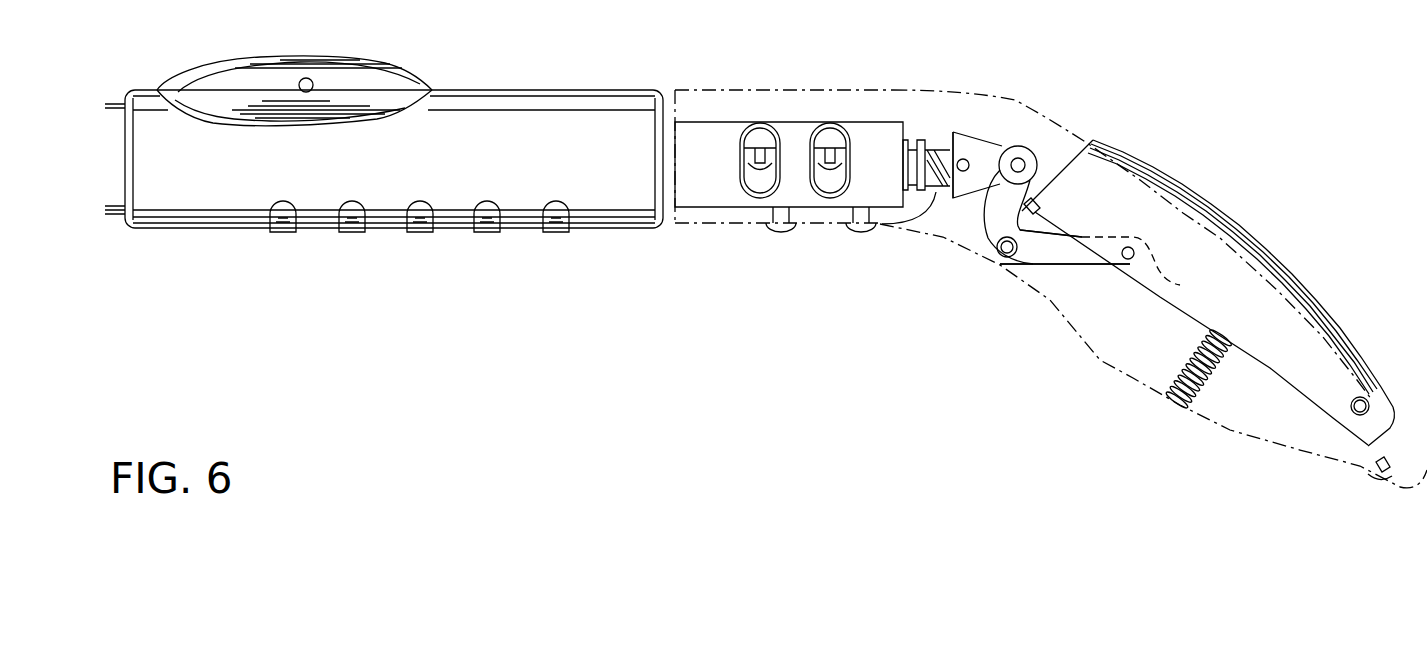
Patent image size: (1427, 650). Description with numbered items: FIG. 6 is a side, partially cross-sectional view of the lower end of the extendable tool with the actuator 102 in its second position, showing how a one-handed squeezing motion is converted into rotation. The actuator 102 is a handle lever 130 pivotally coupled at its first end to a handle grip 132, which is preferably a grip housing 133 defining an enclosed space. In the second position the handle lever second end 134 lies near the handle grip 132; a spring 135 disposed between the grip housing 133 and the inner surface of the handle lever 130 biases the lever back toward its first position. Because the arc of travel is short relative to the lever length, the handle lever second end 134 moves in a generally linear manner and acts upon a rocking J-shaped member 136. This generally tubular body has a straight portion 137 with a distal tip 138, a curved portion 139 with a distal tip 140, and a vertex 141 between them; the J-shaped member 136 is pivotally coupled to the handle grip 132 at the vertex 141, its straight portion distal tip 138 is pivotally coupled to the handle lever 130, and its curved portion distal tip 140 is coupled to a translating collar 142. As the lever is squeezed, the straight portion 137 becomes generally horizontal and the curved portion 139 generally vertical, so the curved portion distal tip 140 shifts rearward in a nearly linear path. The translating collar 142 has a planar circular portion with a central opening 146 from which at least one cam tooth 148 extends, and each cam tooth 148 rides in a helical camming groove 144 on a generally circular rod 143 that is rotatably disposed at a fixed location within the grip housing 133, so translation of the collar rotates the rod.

The actuator 102 is at (1150, 202).
The handle lever 130 is at (1207, 245).
The handle grip 132 is at (1092, 360).
The grip housing 133 is at (1343, 417).
The handle lever second end 134 is at (1088, 195).
The spring 135 is at (1172, 368).
The rocking J-shaped member 136 is at (1043, 266).
The straight portion 137 is at (1093, 266).
The straight portion distal tip 138 is at (1159, 270).
The curved portion 139 is at (987, 260).
The curved portion distal tip 140 is at (963, 250).
The vertex 141 is at (1003, 258).
The translating collar 142 is at (992, 148).
The generally circular rod 143 is at (936, 148).
The camming groove 144 is at (918, 213).
The central opening 146 is at (945, 126).
The cam tooth 148 is at (965, 158).